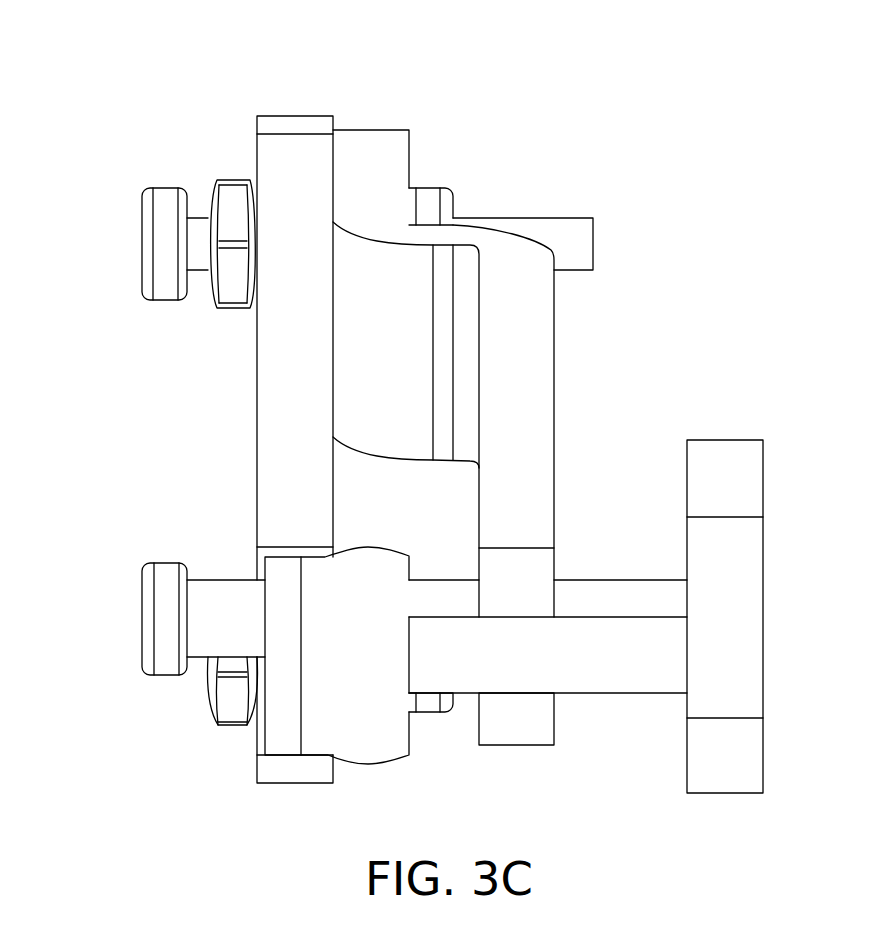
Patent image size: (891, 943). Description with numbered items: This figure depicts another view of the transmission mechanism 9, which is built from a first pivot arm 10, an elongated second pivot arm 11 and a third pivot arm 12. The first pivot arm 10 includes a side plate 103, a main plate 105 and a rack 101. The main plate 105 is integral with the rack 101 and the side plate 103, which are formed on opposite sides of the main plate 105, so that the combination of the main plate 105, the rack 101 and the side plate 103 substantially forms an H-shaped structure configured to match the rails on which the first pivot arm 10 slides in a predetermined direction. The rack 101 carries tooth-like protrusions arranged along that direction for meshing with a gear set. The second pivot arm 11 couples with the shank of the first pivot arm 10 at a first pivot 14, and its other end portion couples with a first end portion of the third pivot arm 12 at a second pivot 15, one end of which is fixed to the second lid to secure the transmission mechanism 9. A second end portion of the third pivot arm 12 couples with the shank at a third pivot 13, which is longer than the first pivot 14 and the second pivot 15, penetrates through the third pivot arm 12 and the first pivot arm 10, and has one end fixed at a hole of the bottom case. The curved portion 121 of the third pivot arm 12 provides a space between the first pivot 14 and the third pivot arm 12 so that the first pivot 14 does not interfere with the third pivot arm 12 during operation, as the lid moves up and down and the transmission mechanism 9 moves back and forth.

The transmission mechanism 9 is at (123, 53).
The first pivot arm 10 is at (524, 584).
The rack 101 is at (265, 755).
The side plate 103 is at (763, 575).
The main plate 105 is at (610, 693).
The second pivot arm 11 is at (257, 432).
The third pivot arm 12 is at (554, 315).
The curved portion 121 is at (507, 228).
The third pivot 13 is at (142, 608).
The first pivot 14 is at (210, 699).
The second pivot 15 is at (142, 243).